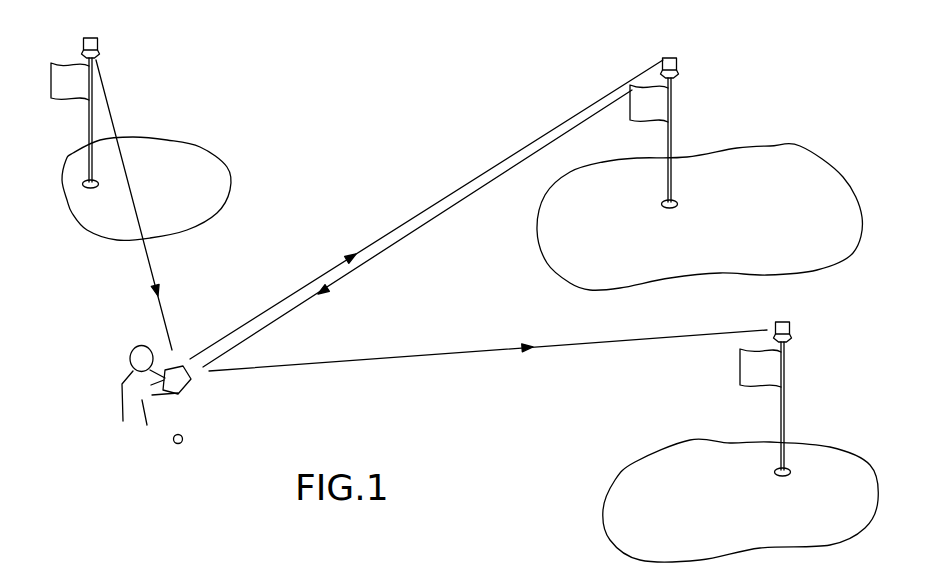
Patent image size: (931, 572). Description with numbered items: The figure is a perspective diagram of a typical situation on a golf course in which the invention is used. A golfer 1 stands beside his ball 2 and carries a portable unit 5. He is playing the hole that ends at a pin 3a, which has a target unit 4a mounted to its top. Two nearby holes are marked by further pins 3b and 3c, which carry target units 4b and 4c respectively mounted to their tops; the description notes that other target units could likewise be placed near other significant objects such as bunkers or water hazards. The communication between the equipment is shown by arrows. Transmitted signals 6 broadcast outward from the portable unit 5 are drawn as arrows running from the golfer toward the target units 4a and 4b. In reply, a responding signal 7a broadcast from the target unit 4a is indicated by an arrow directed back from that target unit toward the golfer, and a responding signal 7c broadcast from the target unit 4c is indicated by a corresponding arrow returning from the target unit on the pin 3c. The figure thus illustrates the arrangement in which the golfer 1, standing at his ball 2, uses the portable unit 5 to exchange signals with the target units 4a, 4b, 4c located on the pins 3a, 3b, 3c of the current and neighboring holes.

The golfer 1 is at (123, 382).
The ball 2 is at (183, 438).
The pin 3a is at (674, 145).
The pin 3b is at (785, 408).
The pin 3c is at (94, 122).
The target unit 4a is at (680, 65).
The target unit 4b is at (795, 328).
The target unit 4c is at (101, 43).
The portable unit 5 is at (167, 345).
The transmitted signals 6 is at (380, 241).
The responding signal 7a is at (401, 246).
The responding signal 7c is at (150, 247).